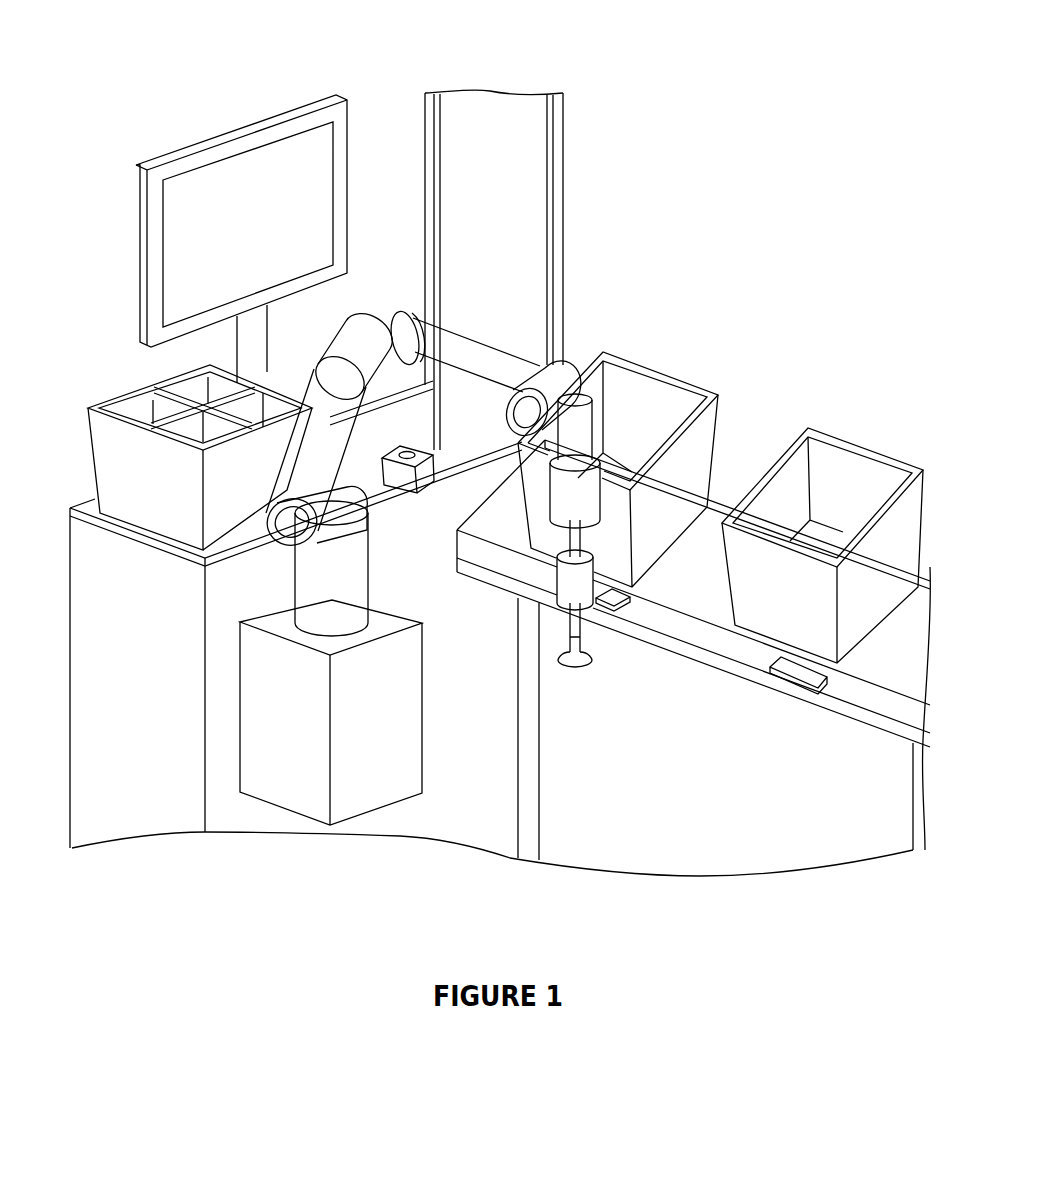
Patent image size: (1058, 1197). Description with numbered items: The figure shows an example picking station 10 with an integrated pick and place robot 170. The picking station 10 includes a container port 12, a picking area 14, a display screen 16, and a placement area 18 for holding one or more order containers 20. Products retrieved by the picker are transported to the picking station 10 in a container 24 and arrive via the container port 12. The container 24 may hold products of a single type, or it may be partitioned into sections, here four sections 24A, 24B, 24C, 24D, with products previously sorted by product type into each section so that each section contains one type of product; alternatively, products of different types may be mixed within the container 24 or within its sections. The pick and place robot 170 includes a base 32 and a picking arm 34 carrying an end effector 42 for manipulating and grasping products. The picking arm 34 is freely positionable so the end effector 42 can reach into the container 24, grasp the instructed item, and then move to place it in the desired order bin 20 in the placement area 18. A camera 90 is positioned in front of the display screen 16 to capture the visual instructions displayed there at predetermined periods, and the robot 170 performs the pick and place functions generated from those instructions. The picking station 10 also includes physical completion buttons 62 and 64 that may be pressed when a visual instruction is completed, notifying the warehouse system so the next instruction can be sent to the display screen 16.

The picking station 10 is at (246, 51).
The container port 12 is at (515, 318).
The picking area 14 is at (158, 574).
The display screen 16 is at (180, 148).
The placement area 18 is at (684, 688).
The order container 20 is at (688, 378).
The container 24 is at (108, 493).
The section 24A is at (143, 412).
The section 24B is at (190, 390).
The section 24C is at (197, 433).
The section 24D is at (253, 412).
The base 32 is at (240, 750).
The picking arm 34 is at (570, 374).
The end effector 42 is at (565, 655).
The completion button 62 is at (620, 598).
The completion button 64 is at (830, 672).
The camera 90 is at (435, 462).
The pick and place robot 170 is at (317, 588).